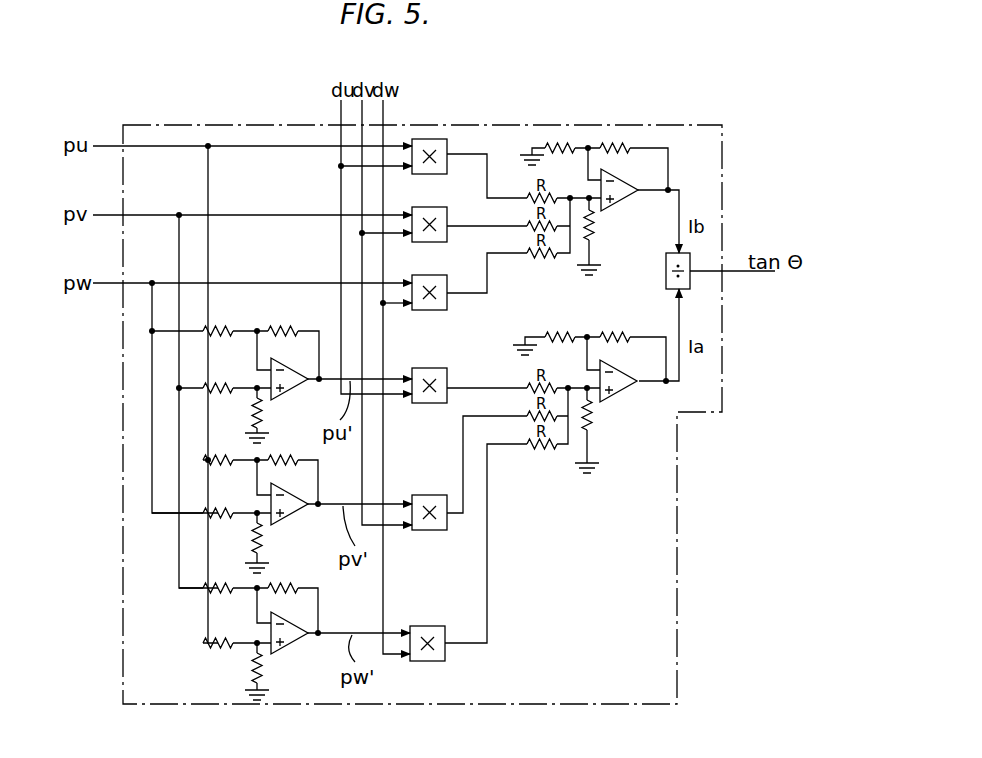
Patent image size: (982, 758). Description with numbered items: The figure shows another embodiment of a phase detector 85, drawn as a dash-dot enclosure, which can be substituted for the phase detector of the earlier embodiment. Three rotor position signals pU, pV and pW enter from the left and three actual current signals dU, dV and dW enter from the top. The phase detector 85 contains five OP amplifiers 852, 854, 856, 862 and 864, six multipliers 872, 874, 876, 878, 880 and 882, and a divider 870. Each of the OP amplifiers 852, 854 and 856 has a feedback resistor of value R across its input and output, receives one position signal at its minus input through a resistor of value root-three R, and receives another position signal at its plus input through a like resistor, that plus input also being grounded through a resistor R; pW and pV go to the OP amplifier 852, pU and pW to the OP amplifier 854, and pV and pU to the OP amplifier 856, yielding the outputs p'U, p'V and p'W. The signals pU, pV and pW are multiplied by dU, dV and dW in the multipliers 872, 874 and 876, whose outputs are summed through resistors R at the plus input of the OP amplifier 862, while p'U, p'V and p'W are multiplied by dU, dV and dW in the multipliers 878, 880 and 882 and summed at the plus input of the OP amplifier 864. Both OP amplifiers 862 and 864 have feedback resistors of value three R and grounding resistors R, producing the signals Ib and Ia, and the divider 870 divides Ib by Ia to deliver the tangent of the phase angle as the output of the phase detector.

The phase detector 85 is at (607, 126).
The OP amplifier 852 is at (283, 392).
The OP amplifier 854 is at (283, 517).
The OP amplifier 856 is at (290, 648).
The OP amplifier 862 is at (618, 202).
The OP amplifier 864 is at (617, 393).
The divider 870 is at (666, 277).
The multiplier 872 is at (432, 174).
The multiplier 874 is at (432, 242).
The multiplier 876 is at (432, 310).
The multiplier 878 is at (440, 368).
The multiplier 880 is at (428, 495).
The multiplier 882 is at (430, 626).